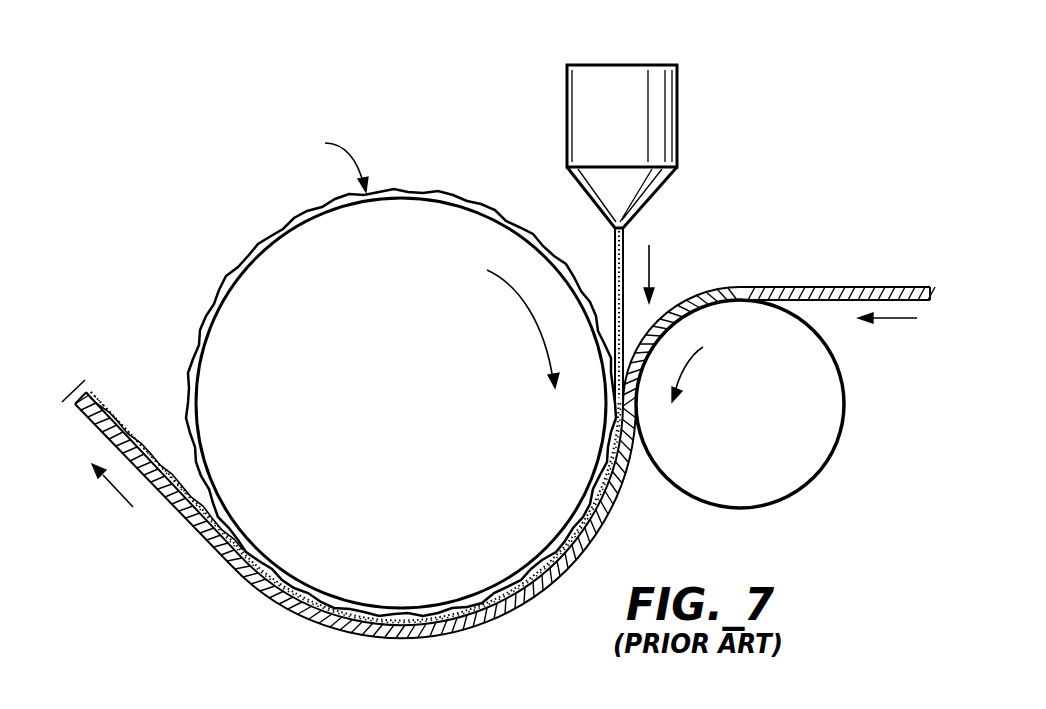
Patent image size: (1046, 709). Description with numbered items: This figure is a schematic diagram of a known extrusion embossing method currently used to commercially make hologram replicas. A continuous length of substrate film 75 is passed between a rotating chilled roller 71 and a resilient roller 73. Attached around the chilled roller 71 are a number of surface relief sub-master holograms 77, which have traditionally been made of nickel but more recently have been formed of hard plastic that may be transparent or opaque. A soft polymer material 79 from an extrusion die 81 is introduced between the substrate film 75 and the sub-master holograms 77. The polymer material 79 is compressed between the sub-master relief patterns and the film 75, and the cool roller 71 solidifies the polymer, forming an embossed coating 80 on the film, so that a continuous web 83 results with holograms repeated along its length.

The chilled roller 71 is at (232, 320).
The resilient roller 73 is at (830, 407).
The substrate film 75 is at (777, 287).
The surface relief sub-master holograms 77 is at (403, 186).
The polymer material 79 is at (619, 262).
The coating 80 is at (100, 413).
The extrusion die 81 is at (660, 128).
The continuous web 83 is at (70, 388).